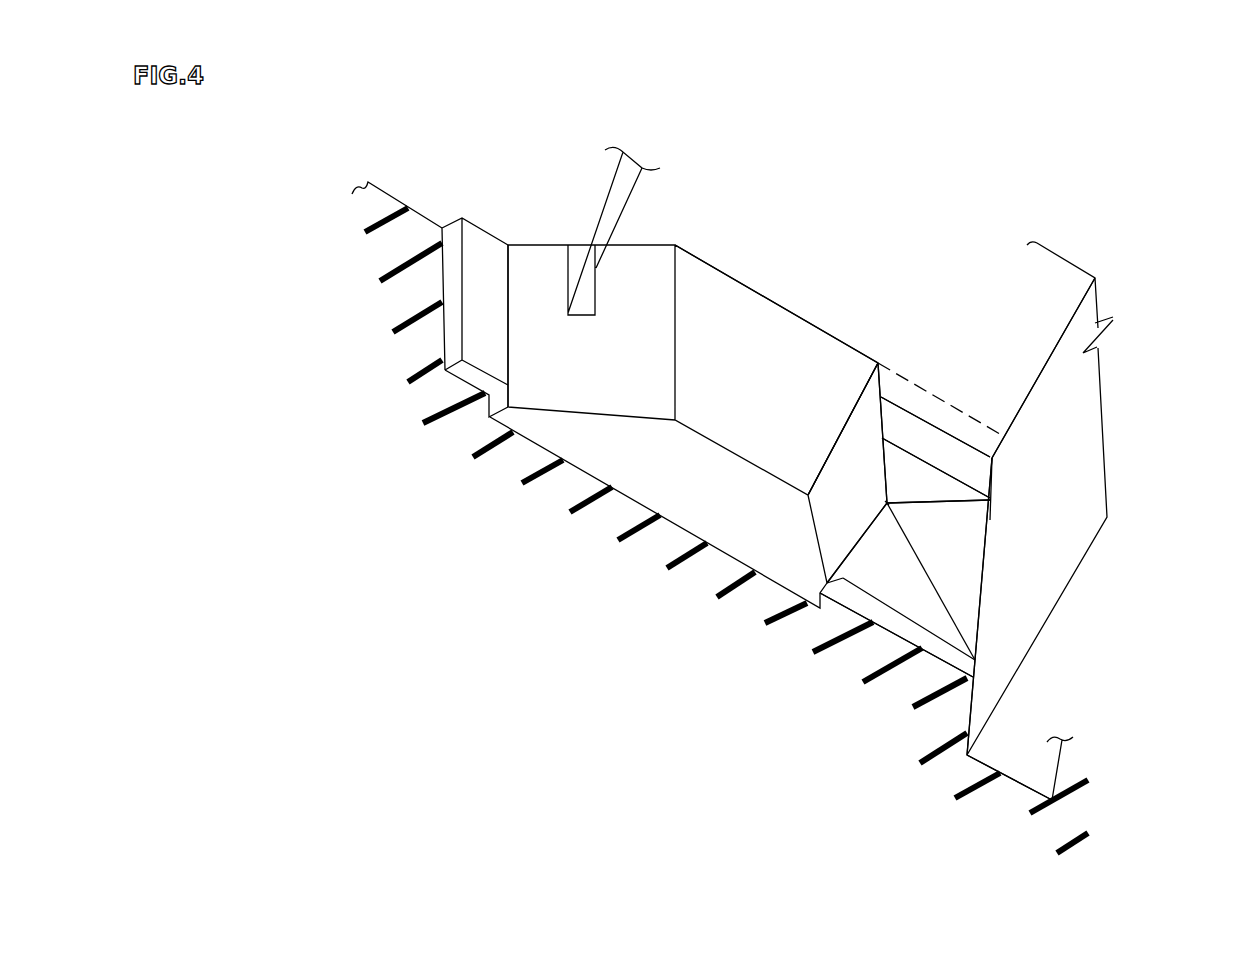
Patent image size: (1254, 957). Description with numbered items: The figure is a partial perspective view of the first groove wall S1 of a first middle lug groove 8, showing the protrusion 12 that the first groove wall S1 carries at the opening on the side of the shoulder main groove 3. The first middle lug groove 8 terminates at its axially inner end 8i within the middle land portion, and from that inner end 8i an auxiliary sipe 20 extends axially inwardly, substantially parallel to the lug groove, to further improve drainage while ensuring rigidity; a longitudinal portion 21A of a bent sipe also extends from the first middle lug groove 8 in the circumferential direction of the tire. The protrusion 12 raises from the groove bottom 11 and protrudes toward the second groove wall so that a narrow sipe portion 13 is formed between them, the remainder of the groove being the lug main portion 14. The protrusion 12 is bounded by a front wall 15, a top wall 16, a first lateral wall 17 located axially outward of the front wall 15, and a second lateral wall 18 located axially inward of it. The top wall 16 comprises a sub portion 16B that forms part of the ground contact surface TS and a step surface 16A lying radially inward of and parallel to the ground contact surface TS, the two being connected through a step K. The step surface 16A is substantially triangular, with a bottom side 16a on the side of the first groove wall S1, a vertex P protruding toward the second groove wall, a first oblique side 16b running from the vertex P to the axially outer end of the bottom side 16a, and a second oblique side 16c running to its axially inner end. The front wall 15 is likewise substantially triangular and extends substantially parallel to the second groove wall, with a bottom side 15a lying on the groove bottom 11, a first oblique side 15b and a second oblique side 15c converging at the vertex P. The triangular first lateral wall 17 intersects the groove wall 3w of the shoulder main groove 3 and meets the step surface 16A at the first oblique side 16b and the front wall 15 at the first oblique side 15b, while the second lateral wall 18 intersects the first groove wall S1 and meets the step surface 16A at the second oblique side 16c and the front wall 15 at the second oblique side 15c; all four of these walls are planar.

The shoulder main groove 3 is at (1023, 747).
The groove wall of the shoulder main groove 3w is at (1082, 465).
The first middle lug groove 8 is at (618, 462).
The lug main portion 14 is at (726, 530).
The axially inner end 8i is at (512, 237).
The groove bottom 11 is at (704, 488).
The protrusion 12 is at (900, 597).
The sipe portion 13 is at (950, 655).
The front wall 15 is at (880, 577).
The bottom side of the front wall 15a is at (928, 600).
The first oblique side of the front wall 15b is at (940, 598).
The second oblique side of the front wall 15c is at (862, 540).
The top wall 16 is at (998, 157).
The step surface 16A is at (903, 465).
The sub portion 16B is at (913, 400).
The bottom side of the step surface 16a is at (930, 460).
The first oblique side of the step surface 16b is at (957, 503).
The second oblique side of the step surface 16c is at (870, 480).
The first lateral wall 17 is at (958, 552).
The second lateral wall 18 is at (840, 483).
The auxiliary sipe 20 is at (483, 263).
The longitudinal portion 21A is at (610, 200).
The vertex P is at (886, 503).
The first groove wall S1 is at (752, 328).
The ground contact surface TS is at (1055, 283).
The step K is at (968, 465).